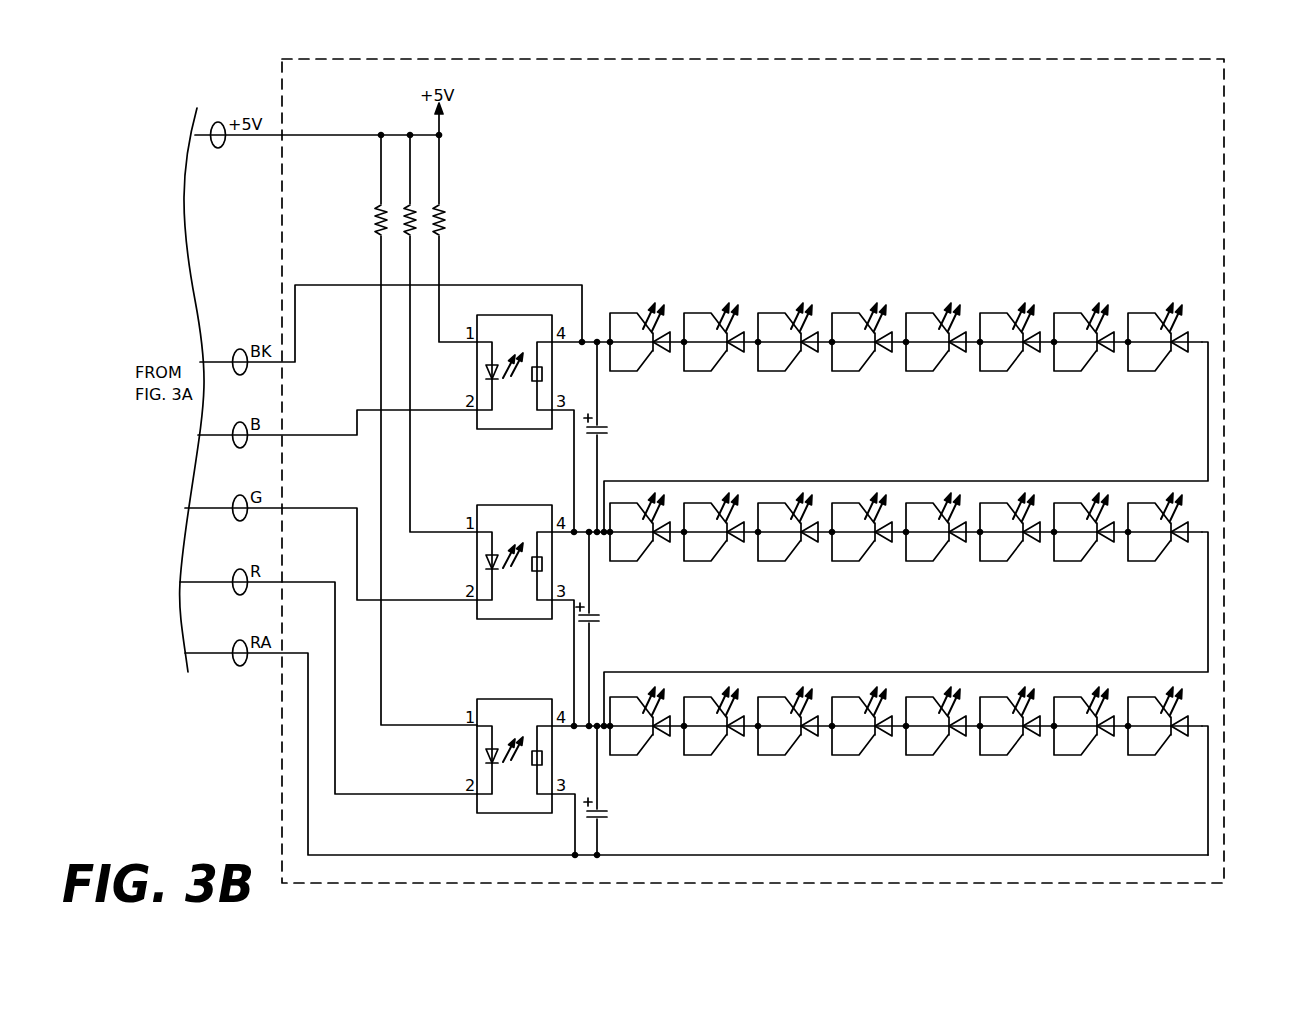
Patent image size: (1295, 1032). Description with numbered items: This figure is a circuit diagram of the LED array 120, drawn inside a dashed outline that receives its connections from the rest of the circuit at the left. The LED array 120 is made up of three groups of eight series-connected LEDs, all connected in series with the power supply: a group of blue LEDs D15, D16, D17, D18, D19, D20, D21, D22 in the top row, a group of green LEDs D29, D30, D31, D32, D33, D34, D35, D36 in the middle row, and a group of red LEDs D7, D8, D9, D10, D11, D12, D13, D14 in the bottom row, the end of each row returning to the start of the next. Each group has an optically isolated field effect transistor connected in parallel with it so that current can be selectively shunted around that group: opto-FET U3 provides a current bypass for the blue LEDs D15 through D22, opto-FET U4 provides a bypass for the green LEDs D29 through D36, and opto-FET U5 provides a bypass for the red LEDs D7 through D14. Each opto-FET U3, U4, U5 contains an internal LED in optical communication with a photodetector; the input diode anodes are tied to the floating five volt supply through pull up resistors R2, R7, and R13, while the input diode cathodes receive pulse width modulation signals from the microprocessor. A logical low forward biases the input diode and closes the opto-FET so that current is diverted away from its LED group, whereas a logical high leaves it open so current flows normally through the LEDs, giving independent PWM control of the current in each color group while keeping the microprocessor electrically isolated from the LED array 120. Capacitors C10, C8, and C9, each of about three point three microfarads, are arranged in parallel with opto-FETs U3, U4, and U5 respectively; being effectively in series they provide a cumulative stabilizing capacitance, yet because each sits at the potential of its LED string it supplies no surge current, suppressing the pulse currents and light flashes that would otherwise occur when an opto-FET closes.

The LED array 120 is at (1224, 158).
The opto-FET U3 is at (515, 362).
The opto-FET U4 is at (515, 552).
The opto-FET U5 is at (515, 746).
The pull up resistor R2 is at (390, 224).
The pull up resistor R7 is at (419, 224).
The pull up resistor R13 is at (451, 224).
The capacitor C10 is at (633, 437).
The capacitor C8 is at (626, 629).
The capacitor C9 is at (633, 790).
The blue LED D15 is at (646, 356).
The blue LED D16 is at (720, 356).
The blue LED D17 is at (794, 356).
The blue LED D18 is at (868, 356).
The blue LED D19 is at (942, 356).
The blue LED D20 is at (1016, 356).
The blue LED D21 is at (1090, 356).
The blue LED D22 is at (1164, 356).
The green LED D29 is at (646, 546).
The green LED D30 is at (720, 546).
The green LED D31 is at (794, 546).
The green LED D32 is at (868, 546).
The green LED D33 is at (942, 546).
The green LED D34 is at (1016, 546).
The green LED D35 is at (1090, 546).
The green LED D36 is at (1164, 546).
The red LED D7 is at (646, 740).
The red LED D8 is at (720, 740).
The red LED D9 is at (794, 740).
The red LED D10 is at (868, 740).
The red LED D11 is at (942, 740).
The red LED D12 is at (1016, 740).
The red LED D13 is at (1090, 740).
The red LED D14 is at (1164, 740).